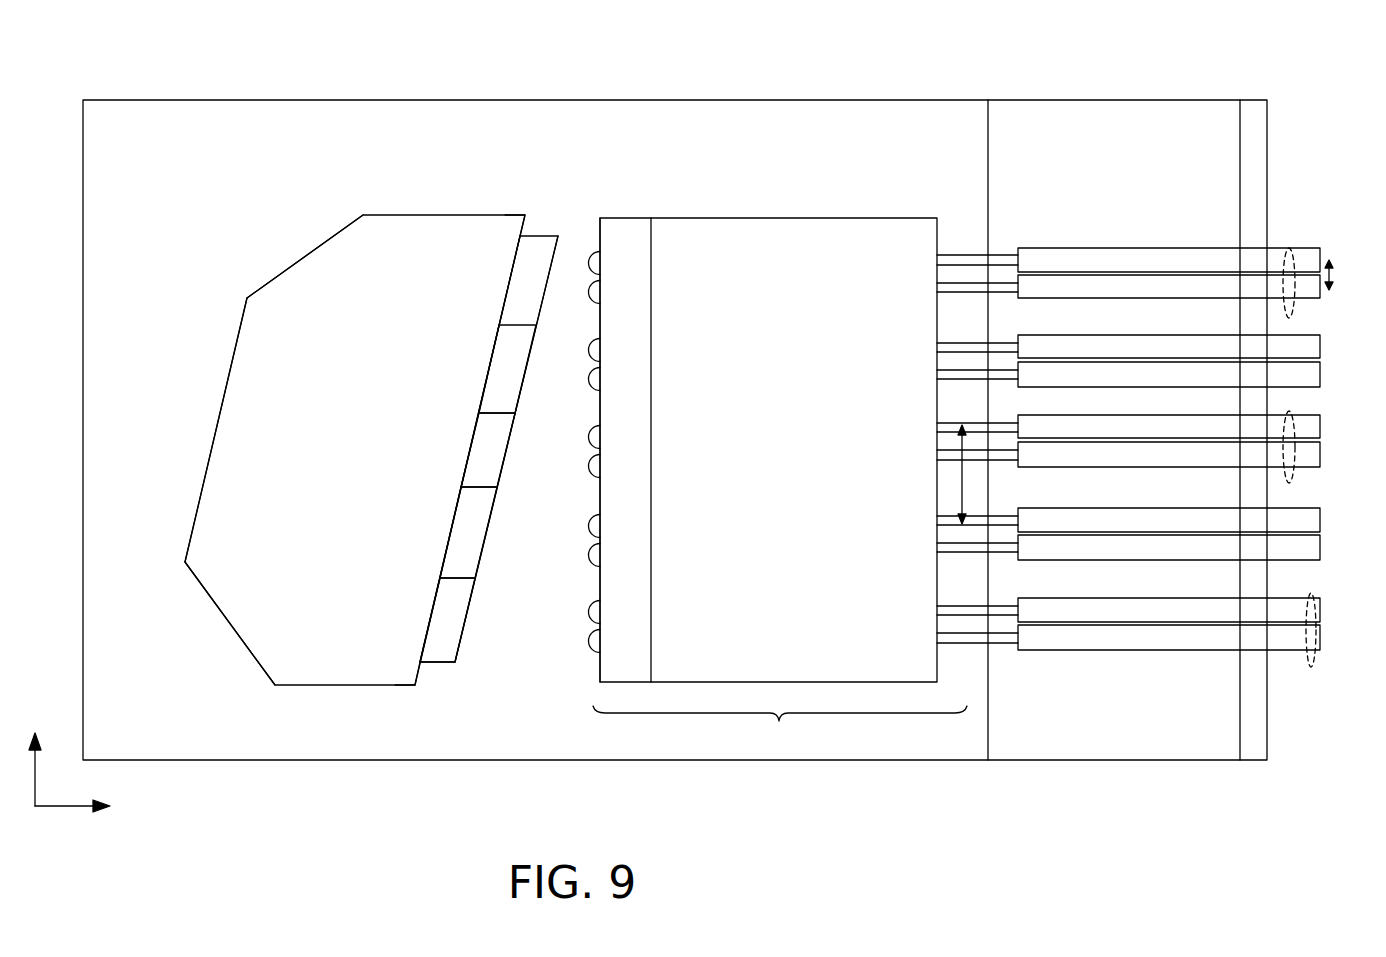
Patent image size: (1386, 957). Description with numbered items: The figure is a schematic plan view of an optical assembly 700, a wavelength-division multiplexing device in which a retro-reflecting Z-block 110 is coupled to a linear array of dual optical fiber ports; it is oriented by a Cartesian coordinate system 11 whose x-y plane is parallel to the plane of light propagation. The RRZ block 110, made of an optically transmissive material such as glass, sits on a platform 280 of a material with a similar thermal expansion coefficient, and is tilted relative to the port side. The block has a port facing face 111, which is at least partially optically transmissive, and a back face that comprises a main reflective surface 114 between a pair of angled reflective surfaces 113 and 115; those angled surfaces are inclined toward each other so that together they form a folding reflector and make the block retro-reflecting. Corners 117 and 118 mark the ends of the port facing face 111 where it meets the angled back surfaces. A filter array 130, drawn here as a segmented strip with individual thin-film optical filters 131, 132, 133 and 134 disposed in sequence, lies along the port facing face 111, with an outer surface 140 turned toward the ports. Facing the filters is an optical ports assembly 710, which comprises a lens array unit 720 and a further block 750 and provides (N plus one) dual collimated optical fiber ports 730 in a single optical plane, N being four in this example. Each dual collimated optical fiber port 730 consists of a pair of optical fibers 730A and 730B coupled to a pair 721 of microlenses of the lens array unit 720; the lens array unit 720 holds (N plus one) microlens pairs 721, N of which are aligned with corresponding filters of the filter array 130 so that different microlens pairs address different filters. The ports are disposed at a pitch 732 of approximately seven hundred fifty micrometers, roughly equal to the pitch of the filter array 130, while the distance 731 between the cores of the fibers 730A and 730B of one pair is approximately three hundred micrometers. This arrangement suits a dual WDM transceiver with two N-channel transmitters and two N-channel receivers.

The optical assembly 700 is at (640, 54).
The platform 280 is at (137, 140).
The retro-reflecting Z-block 110 is at (241, 224).
The port facing face 111 is at (492, 307).
The angled reflective surface 113 is at (322, 246).
The main reflective surface 114 is at (220, 372).
The angled reflective surface 115 is at (242, 647).
The upper corner 117 is at (525, 213).
The lower corner 118 is at (417, 680).
The filter array 130 is at (485, 493).
The optical filter 131 is at (532, 377).
The optical filter 132 is at (503, 472).
The optical filter 133 is at (482, 552).
The optical filter 134 is at (460, 645).
The outer surface of magnet array 140 is at (557, 255).
The lens array unit 720 is at (617, 217).
The microlens pair 721 is at (593, 523).
The stator core 750 is at (830, 217).
The optical ports assembly 710 is at (780, 732).
The dual collimated optical fiber port 730 is at (1161, 465).
The optical fiber 730A is at (1098, 250).
The optical fiber 730B is at (1190, 280).
The distance between fiber cores 731 is at (1333, 276).
The pitch 732 is at (966, 465).
The Cartesian coordinate system 11 is at (71, 840).